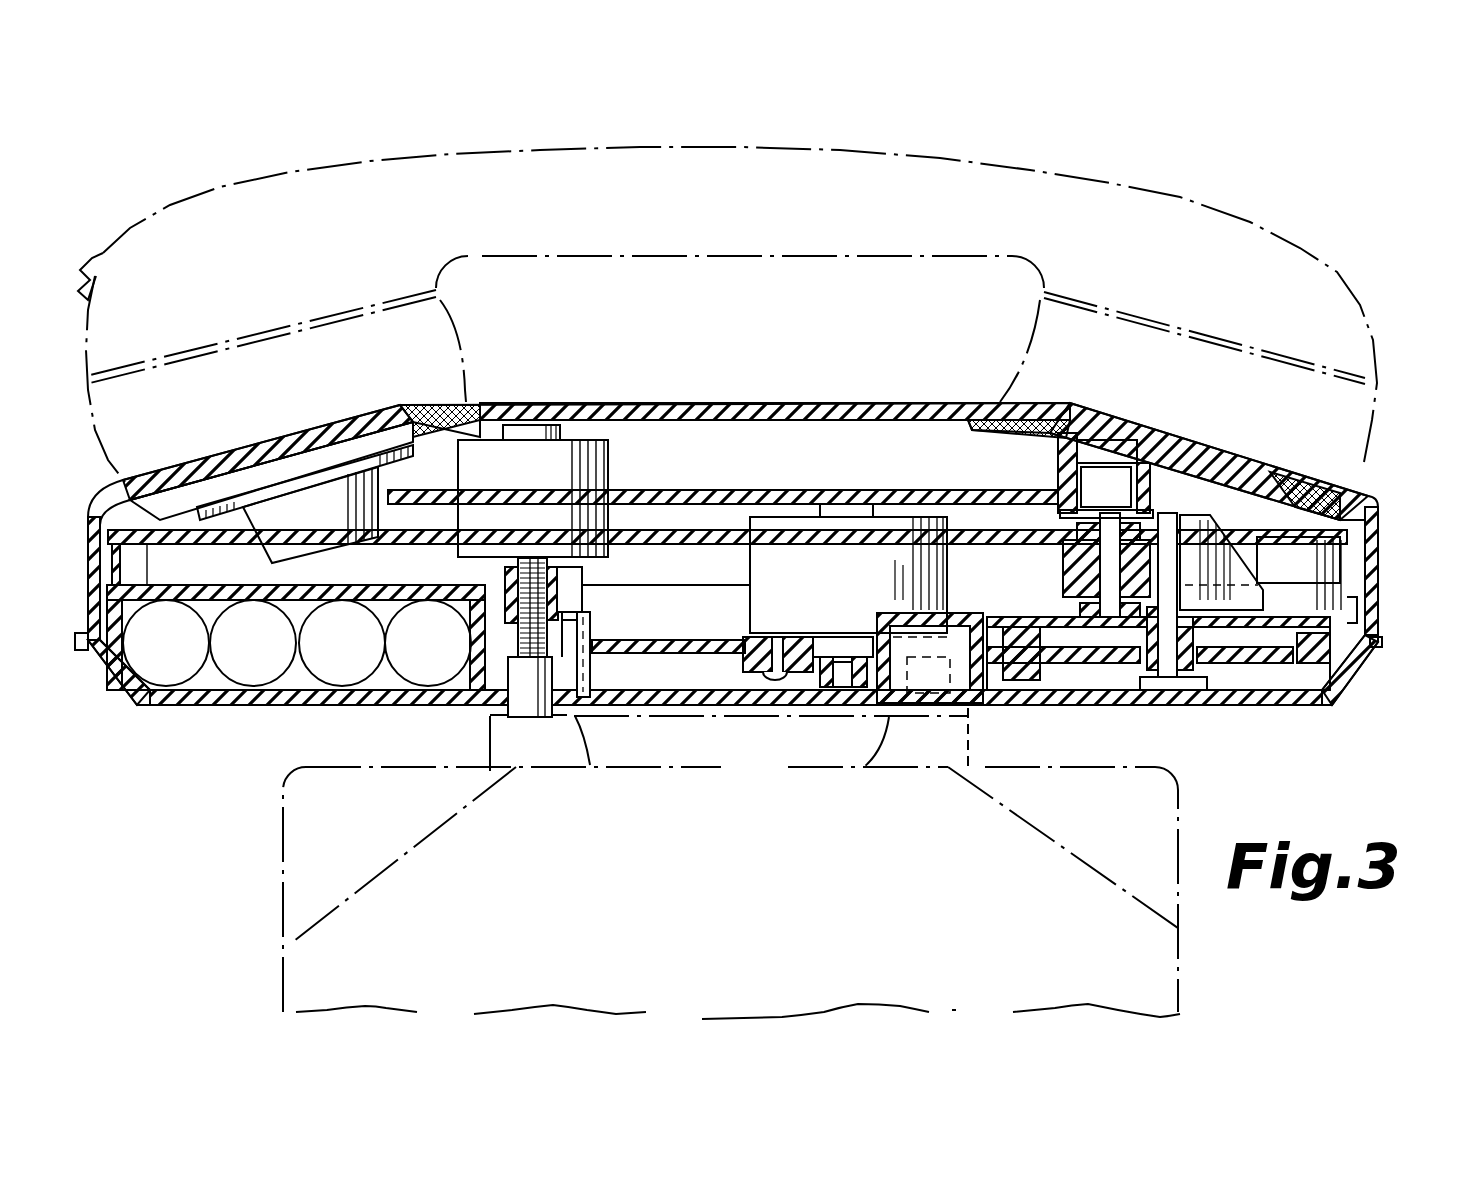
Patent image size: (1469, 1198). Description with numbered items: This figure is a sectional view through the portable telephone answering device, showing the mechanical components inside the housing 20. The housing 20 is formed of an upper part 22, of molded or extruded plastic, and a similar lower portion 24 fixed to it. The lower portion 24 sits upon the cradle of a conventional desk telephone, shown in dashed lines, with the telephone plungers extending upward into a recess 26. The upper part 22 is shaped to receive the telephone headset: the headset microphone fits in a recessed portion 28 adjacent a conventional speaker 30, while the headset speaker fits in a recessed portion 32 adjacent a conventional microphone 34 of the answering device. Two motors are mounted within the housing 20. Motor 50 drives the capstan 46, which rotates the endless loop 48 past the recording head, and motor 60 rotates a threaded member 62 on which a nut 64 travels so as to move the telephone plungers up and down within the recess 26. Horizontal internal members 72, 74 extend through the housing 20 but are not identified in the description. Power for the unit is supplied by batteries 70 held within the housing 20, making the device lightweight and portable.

The housing 20 is at (180, 706).
The upper part 22 is at (643, 403).
The lower portion 24 is at (370, 706).
The recess 26 is at (560, 672).
The recessed portion 28 is at (220, 490).
The speaker 30 is at (307, 487).
The recessed portion 32 is at (1132, 470).
The microphone 34 is at (1105, 445).
The capstan 46 is at (1063, 568).
The endless loop 48 is at (653, 572).
The motor 50 is at (768, 565).
The motor 60 is at (608, 463).
The threaded member 62 is at (575, 607).
The nut 64 is at (558, 593).
The batteries 70 is at (328, 662).
The upper plate 72 is at (766, 490).
The lower plate 74 is at (985, 530).